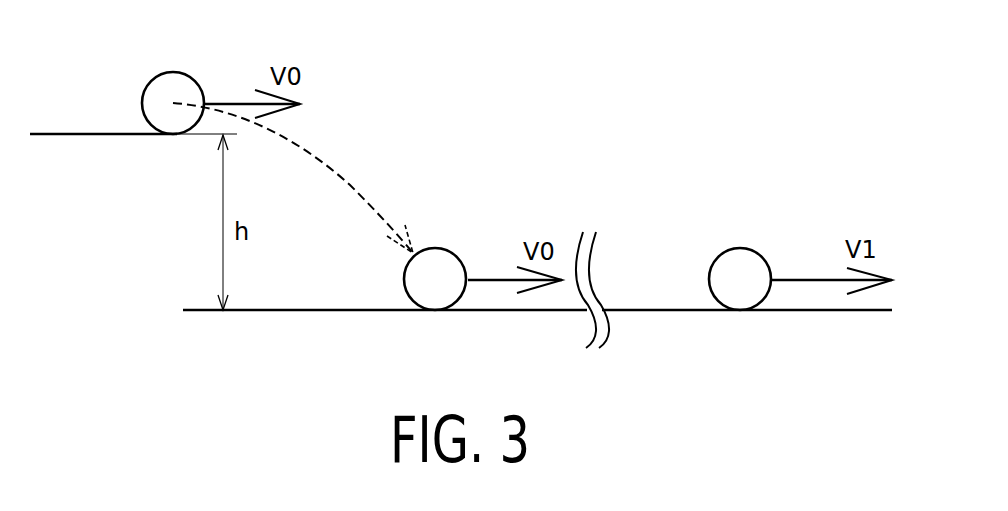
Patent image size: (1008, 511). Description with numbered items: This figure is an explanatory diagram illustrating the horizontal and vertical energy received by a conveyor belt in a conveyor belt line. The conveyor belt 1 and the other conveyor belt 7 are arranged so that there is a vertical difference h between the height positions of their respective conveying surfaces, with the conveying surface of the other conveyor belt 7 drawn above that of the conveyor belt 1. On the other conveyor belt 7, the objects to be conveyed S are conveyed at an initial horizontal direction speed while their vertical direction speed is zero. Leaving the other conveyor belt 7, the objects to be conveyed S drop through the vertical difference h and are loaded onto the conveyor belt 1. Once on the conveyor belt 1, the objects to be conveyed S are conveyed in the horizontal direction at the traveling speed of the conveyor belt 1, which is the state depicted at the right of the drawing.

The other conveyor belt 7 is at (80, 125).
The conveyor belt 1 is at (645, 310).
The objects to be conveyed S is at (178, 82).